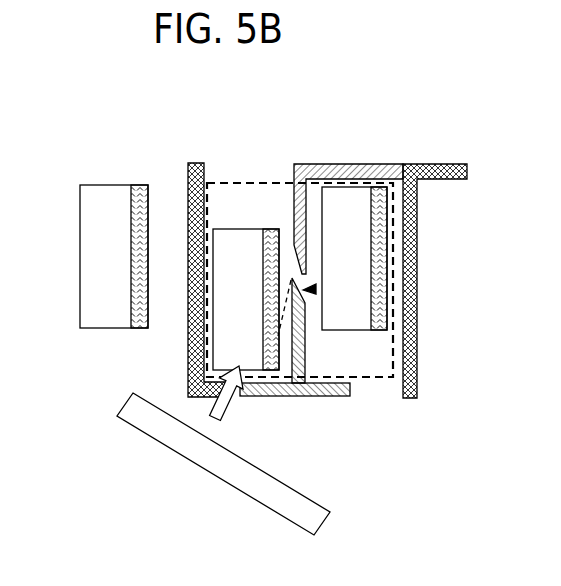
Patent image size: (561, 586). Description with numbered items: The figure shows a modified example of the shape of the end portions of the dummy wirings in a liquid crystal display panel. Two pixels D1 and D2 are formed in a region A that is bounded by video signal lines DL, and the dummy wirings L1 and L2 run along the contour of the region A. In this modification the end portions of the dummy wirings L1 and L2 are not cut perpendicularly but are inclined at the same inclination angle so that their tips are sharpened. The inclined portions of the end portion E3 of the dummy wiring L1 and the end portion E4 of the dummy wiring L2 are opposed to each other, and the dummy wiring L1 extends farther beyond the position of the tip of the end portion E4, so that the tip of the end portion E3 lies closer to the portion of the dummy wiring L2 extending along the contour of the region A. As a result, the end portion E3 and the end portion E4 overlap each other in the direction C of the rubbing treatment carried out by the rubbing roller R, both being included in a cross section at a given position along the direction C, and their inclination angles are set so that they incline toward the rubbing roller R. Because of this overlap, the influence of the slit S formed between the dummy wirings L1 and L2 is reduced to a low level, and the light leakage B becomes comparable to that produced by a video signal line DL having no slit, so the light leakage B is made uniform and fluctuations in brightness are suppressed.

The region A is at (258, 183).
The light leakage B is at (141, 185).
The direction of rubbing treatment C is at (222, 406).
The pixel D1 is at (233, 236).
The pixel D2 is at (86, 259).
The video signal line DL is at (428, 164).
The end portion of dummy wiring L1 E3 is at (301, 308).
The end portion of dummy wiring L2 E4 is at (293, 274).
The dummy wiring L1 is at (306, 350).
The dummy wiring L2 is at (333, 164).
The rubbing roller R is at (227, 483).
The slit S is at (315, 289).